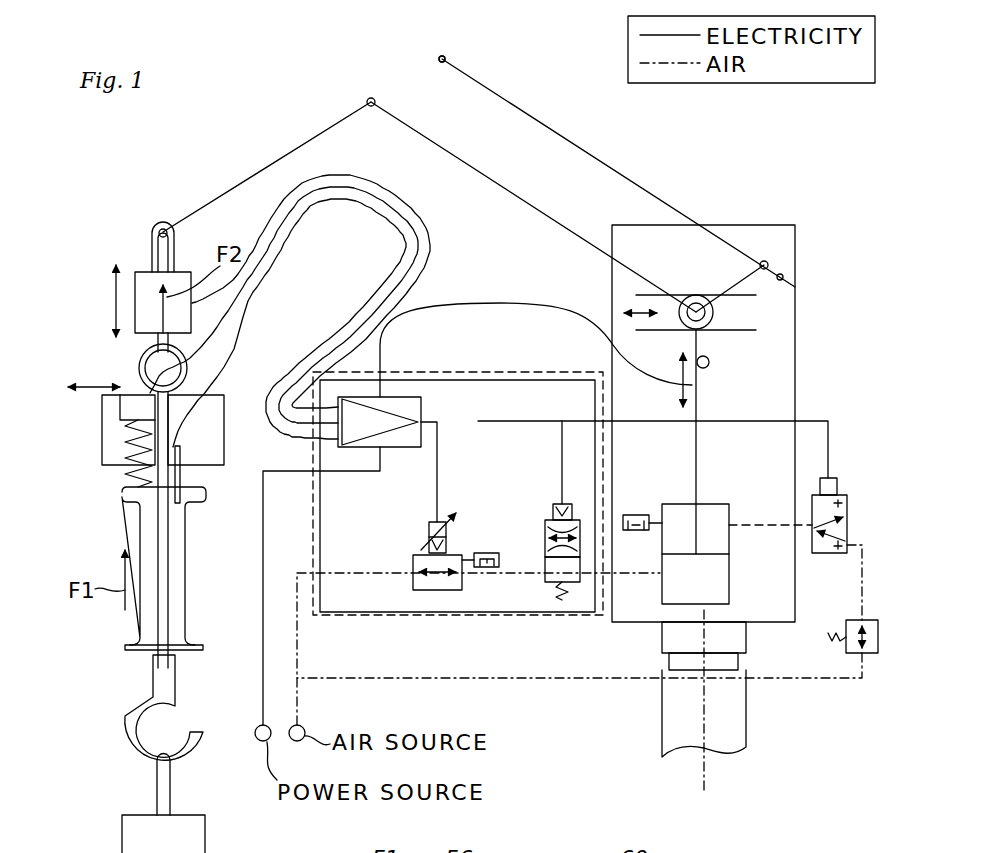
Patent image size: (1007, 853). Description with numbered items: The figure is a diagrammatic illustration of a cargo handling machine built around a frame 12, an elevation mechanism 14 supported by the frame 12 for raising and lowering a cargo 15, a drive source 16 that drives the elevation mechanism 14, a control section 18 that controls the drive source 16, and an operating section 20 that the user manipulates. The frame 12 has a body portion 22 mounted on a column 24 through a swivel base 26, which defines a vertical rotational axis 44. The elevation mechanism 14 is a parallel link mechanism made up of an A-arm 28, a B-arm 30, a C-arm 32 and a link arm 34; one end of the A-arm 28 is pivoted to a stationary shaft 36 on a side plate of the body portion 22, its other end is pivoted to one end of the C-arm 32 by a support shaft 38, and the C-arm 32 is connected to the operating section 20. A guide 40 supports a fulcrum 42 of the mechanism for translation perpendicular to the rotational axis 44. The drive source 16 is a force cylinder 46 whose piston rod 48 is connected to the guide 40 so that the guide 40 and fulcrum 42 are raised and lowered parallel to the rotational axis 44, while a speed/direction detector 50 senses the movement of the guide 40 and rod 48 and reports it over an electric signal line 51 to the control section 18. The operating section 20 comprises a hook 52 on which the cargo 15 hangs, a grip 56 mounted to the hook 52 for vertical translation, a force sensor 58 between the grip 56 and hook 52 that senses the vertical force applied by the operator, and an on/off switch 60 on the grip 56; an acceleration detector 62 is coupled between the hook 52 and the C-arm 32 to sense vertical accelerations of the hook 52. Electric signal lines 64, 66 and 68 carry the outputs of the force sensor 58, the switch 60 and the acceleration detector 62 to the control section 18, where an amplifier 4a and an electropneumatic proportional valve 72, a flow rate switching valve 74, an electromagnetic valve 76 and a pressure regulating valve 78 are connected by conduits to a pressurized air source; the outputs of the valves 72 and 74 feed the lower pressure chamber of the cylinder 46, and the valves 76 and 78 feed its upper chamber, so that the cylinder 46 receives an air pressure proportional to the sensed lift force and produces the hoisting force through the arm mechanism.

The frame 12 is at (871, 530).
The elevation mechanism 14 is at (371, 93).
The cargo 15 is at (206, 833).
The drive source 16 is at (736, 559).
The control section 18 is at (313, 537).
The operating section 20 is at (220, 427).
The body portion 22 is at (797, 575).
The column 24 is at (748, 724).
The swivel base 26 is at (748, 641).
The A-arm 28 is at (637, 183).
The B-arm 30 is at (562, 226).
The C-arm 32 is at (273, 163).
The link arm 34 is at (735, 283).
The stationary shaft 36 is at (796, 286).
The support shaft 38 is at (446, 59).
The guide 40 is at (748, 296).
The fulcrum 42 is at (703, 327).
The vertical rotational axis 44 is at (710, 778).
The force cylinder 46 is at (660, 541).
The piston rod 48 is at (698, 400).
The speed/direction detector 50 is at (712, 363).
The electric signal line 51 is at (528, 305).
The hook 52 is at (197, 753).
The grip 56 is at (132, 653).
The force sensor 58 is at (130, 412).
The on/off switch 60 is at (182, 510).
The acceleration detector 62 is at (140, 273).
The electric signal line 64 is at (268, 258).
The electric signal line 66 is at (283, 280).
The electric signal line 68 is at (337, 177).
The electropneumatic proportional valve 72 is at (413, 560).
The flow rate switching valve 74 is at (562, 600).
The electromagnetic valve 76 is at (848, 494).
The pressure regulating valve 78 is at (877, 657).
The amplifier 4a is at (407, 419).